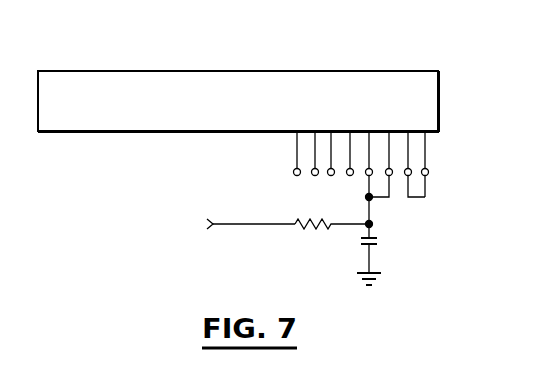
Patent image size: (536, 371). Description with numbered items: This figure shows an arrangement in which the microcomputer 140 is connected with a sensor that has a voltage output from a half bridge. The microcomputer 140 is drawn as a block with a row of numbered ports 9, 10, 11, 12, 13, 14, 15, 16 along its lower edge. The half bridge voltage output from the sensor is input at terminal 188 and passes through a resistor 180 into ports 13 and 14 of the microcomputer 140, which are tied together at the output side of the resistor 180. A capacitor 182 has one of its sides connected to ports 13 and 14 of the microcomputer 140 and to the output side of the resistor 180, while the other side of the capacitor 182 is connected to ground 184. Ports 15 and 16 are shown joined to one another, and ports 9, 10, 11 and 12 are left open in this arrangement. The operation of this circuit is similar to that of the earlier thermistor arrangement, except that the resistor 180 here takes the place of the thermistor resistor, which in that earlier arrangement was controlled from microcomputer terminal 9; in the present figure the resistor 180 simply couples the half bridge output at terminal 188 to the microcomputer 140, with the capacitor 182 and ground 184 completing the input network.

The microcomputer 140 is at (253, 71).
The microcomputer terminal 9 is at (293, 154).
The microcomputer pin 10 is at (306, 154).
The microcomputer pin 11 is at (322, 154).
The microcomputer pin 12 is at (341, 154).
The microcomputer port 13 is at (360, 178).
The microcomputer port 14 is at (380, 164).
The microcomputer pin 15 is at (406, 164).
The microcomputer pin 16 is at (416, 164).
The resistor 180 is at (328, 233).
The capacitor 182 is at (377, 239).
The ground 184 is at (380, 276).
The terminal 188 is at (197, 224).